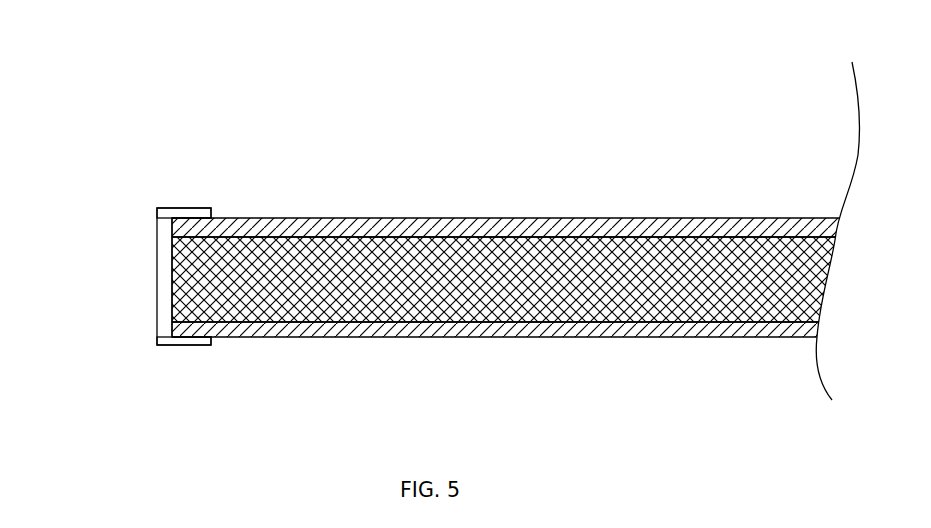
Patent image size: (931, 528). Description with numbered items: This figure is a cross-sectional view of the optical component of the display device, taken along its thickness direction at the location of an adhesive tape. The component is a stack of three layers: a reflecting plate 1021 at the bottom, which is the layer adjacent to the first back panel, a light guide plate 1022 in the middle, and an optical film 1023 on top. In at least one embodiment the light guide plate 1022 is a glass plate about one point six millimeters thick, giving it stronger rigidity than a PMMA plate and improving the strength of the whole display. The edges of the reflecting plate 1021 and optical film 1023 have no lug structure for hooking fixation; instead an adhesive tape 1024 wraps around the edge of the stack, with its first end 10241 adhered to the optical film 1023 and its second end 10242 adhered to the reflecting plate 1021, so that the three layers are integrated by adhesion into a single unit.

The reflecting plate 1021 is at (350, 330).
The light guide plate 1022 is at (418, 262).
The optical film 1023 is at (300, 222).
The adhesive tape 1024 is at (166, 263).
The first end 10241 is at (168, 200).
The second end 10242 is at (175, 352).